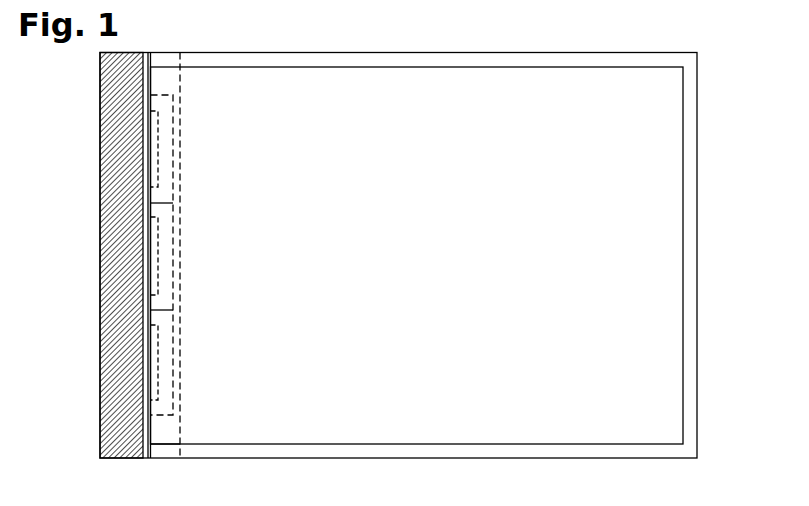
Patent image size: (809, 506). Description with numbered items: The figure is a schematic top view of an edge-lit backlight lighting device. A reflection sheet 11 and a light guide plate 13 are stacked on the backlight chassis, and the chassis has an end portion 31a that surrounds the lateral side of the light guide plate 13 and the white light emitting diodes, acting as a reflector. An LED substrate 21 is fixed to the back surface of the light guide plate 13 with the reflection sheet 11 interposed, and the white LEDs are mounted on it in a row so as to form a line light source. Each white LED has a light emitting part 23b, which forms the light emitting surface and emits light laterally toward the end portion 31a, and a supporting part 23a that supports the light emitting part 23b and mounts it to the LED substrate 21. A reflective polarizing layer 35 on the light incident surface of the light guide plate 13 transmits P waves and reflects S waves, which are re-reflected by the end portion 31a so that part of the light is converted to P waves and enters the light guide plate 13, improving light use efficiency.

The reflection sheet 11 is at (690, 117).
The light guide plate 13 is at (650, 360).
The LED substrate 21 is at (157, 432).
The supporting part 23a is at (157, 103).
The light emitting part 23b is at (153, 147).
The end portion of the backlight chassis 31a is at (110, 373).
The reflective polarizing layer 35 is at (150, 253).